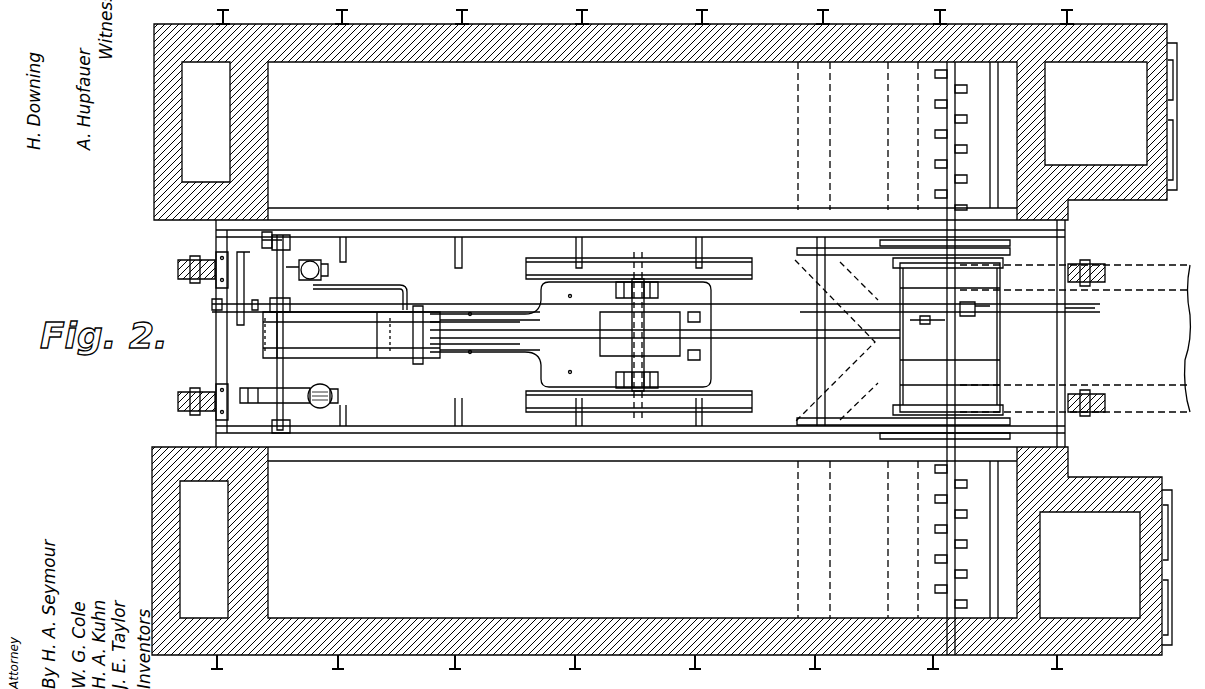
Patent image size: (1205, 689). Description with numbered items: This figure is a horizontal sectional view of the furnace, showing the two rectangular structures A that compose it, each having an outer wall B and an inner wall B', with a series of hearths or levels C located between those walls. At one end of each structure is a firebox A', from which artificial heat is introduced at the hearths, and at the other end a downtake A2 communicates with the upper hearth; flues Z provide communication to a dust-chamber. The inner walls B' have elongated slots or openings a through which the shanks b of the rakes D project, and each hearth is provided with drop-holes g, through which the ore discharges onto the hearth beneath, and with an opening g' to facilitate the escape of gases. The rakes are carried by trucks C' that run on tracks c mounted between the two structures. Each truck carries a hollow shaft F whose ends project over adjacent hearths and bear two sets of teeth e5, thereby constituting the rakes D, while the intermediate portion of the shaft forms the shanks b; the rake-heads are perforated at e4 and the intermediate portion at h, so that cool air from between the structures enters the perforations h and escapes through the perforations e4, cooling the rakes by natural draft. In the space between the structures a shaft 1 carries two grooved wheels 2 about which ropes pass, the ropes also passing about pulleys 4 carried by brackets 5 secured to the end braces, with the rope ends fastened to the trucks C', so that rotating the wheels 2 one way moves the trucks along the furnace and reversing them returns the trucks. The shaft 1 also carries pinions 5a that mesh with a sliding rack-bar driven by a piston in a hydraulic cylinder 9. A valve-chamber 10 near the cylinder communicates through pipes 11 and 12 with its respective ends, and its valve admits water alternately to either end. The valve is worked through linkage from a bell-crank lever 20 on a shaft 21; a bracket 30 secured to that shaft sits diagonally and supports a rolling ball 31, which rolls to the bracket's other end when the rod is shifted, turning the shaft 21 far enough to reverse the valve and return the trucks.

The shaft 1 is at (628, 362).
The grooved wheels 2 is at (645, 335).
The pulleys 4 is at (190, 328).
The brackets 5 is at (212, 336).
The pinions 5a is at (668, 380).
The hydraulic cylinder 9 is at (392, 348).
The valve-chamber 10 is at (328, 273).
The pipe 11 is at (244, 278).
The pipe 12 is at (385, 280).
The bell-crank lever 20 is at (290, 260).
The shaft 21 is at (284, 372).
The bracket 30 is at (339, 396).
The rolling ball 31 is at (294, 384).
The rectangular structures A is at (660, 110).
The firebox A' is at (1180, 344).
The downtake A2 is at (639, 399).
The outer wall B is at (687, 340).
The inner wall B' is at (674, 331).
The hearths C is at (532, 338).
The trucks C' is at (1075, 338).
The rakes D is at (935, 118).
The flues Z is at (880, 528).
The perforations e4 is at (940, 532).
The teeth e5 is at (990, 548).
The drop-holes g is at (968, 588).
The opening g' is at (1033, 343).
The elongated slots a is at (393, 468).
The shanks b is at (955, 240).
The tracks c is at (902, 336).
The hollow shaft F is at (948, 336).
The perforations h is at (950, 337).